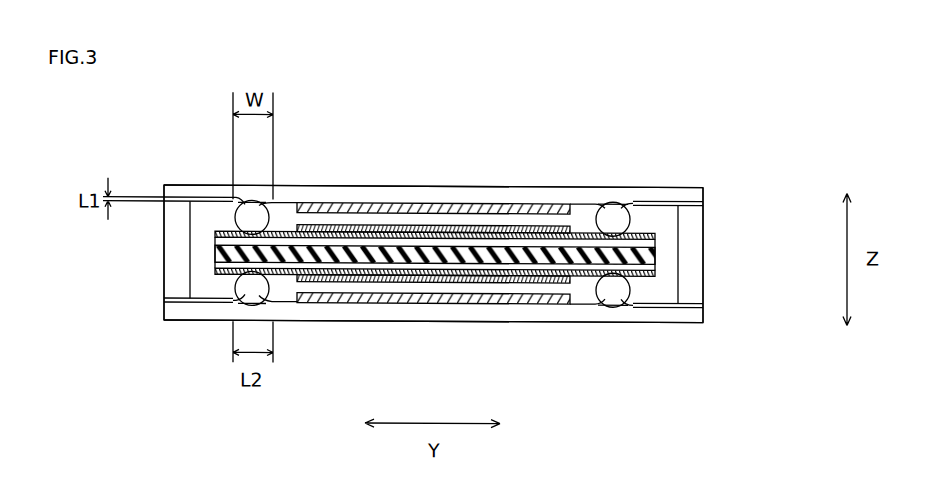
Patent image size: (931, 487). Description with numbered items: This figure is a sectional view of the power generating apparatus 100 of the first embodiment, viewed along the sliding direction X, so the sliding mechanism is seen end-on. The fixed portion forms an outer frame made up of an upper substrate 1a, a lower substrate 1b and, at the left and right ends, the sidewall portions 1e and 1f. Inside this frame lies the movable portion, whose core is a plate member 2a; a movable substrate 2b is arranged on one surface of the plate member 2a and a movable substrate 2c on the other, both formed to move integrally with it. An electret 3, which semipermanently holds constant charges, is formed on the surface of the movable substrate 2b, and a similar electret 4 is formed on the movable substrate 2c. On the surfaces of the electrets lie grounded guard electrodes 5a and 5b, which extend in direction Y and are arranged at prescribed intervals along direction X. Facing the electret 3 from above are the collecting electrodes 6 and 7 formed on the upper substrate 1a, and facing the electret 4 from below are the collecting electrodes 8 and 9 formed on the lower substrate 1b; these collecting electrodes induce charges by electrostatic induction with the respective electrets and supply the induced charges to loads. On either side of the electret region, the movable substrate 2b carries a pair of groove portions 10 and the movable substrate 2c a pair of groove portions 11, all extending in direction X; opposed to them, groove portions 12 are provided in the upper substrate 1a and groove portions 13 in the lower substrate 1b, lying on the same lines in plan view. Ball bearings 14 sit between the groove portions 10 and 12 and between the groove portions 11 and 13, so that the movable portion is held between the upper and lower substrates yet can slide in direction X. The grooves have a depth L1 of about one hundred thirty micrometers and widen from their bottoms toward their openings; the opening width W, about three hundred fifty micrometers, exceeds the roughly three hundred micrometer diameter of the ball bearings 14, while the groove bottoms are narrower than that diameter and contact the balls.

The power generating apparatus 100 is at (777, 88).
The upper substrate 1a is at (677, 190).
The lower substrate 1b is at (676, 321).
The sidewall portion 1e is at (170, 295).
The sidewall portion 1f is at (704, 251).
The plate member 2a is at (214, 253).
The movable substrate 2b is at (214, 238).
The movable substrate 2c is at (214, 269).
The electret 3 is at (410, 225).
The electret 4 is at (408, 282).
The guard electrode 5a is at (488, 203).
The guard electrode 5b is at (490, 292).
The collecting electrode 6 is at (372, 199).
The collecting electrode 7 is at (433, 202).
The collecting electrode 8 is at (360, 301).
The collecting electrode 9 is at (433, 299).
The groove portion 10 is at (632, 218).
The groove portion 11 is at (634, 307).
The groove portion 12 is at (608, 201).
The groove portion 13 is at (617, 307).
The ball bearing 14 is at (272, 203).